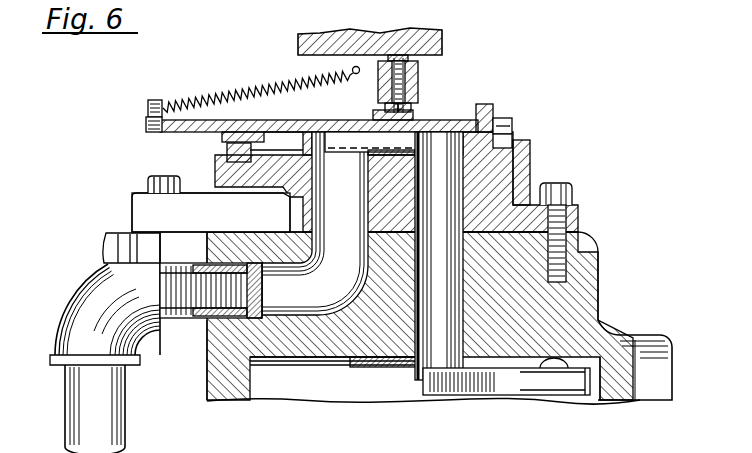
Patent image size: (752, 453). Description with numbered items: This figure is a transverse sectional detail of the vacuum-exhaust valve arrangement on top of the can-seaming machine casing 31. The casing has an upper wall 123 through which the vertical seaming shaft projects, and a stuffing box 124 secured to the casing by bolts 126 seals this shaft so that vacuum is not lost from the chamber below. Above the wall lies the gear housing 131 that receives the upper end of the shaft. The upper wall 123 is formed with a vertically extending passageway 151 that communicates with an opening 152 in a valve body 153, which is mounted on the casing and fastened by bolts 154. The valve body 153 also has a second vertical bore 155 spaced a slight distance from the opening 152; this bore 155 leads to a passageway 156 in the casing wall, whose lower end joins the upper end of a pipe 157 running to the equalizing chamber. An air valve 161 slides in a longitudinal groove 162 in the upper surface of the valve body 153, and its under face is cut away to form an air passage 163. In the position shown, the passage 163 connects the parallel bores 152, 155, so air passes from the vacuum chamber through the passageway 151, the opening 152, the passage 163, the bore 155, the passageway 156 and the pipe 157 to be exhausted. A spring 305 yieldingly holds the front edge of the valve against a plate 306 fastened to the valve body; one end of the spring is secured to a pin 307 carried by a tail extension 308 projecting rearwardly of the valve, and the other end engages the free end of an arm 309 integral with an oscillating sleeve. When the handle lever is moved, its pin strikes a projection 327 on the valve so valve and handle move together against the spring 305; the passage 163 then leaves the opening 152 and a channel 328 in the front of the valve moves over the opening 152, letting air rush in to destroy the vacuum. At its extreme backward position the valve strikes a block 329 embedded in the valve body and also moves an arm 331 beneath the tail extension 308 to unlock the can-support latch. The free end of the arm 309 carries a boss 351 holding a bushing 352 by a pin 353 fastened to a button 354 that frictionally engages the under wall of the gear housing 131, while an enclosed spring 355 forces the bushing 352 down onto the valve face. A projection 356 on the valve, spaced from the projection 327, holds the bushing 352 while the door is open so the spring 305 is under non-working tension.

The casing 31 is at (622, 378).
The upper wall 123 is at (590, 289).
The stuffing box 124 is at (142, 207).
The bolts 126 is at (150, 186).
The gear housing 131 is at (300, 42).
The passageway 151 is at (430, 342).
The opening 152 is at (450, 170).
The valve body 153 is at (566, 213).
The bolts 154 is at (573, 193).
The bore 155 is at (338, 205).
The passageway 156 is at (283, 300).
The pipe 157 is at (78, 406).
The air valve 161 is at (513, 124).
The longitudinal groove 162 is at (285, 139).
The air passage 163 is at (393, 143).
The spring 305 is at (198, 99).
The plate 306 is at (530, 186).
The pin 307 is at (152, 104).
The tail extension 308 is at (147, 126).
The arm 309 is at (352, 71).
The projection 327 is at (494, 108).
The channel 328 is at (513, 139).
The block 329 is at (227, 151).
The arm 331 is at (222, 136).
The boss 351 is at (420, 71).
The bushing 352 is at (390, 104).
The pin 353 is at (418, 95).
The button 354 is at (418, 59).
The spring 355 is at (420, 83).
The projection 356 is at (373, 116).